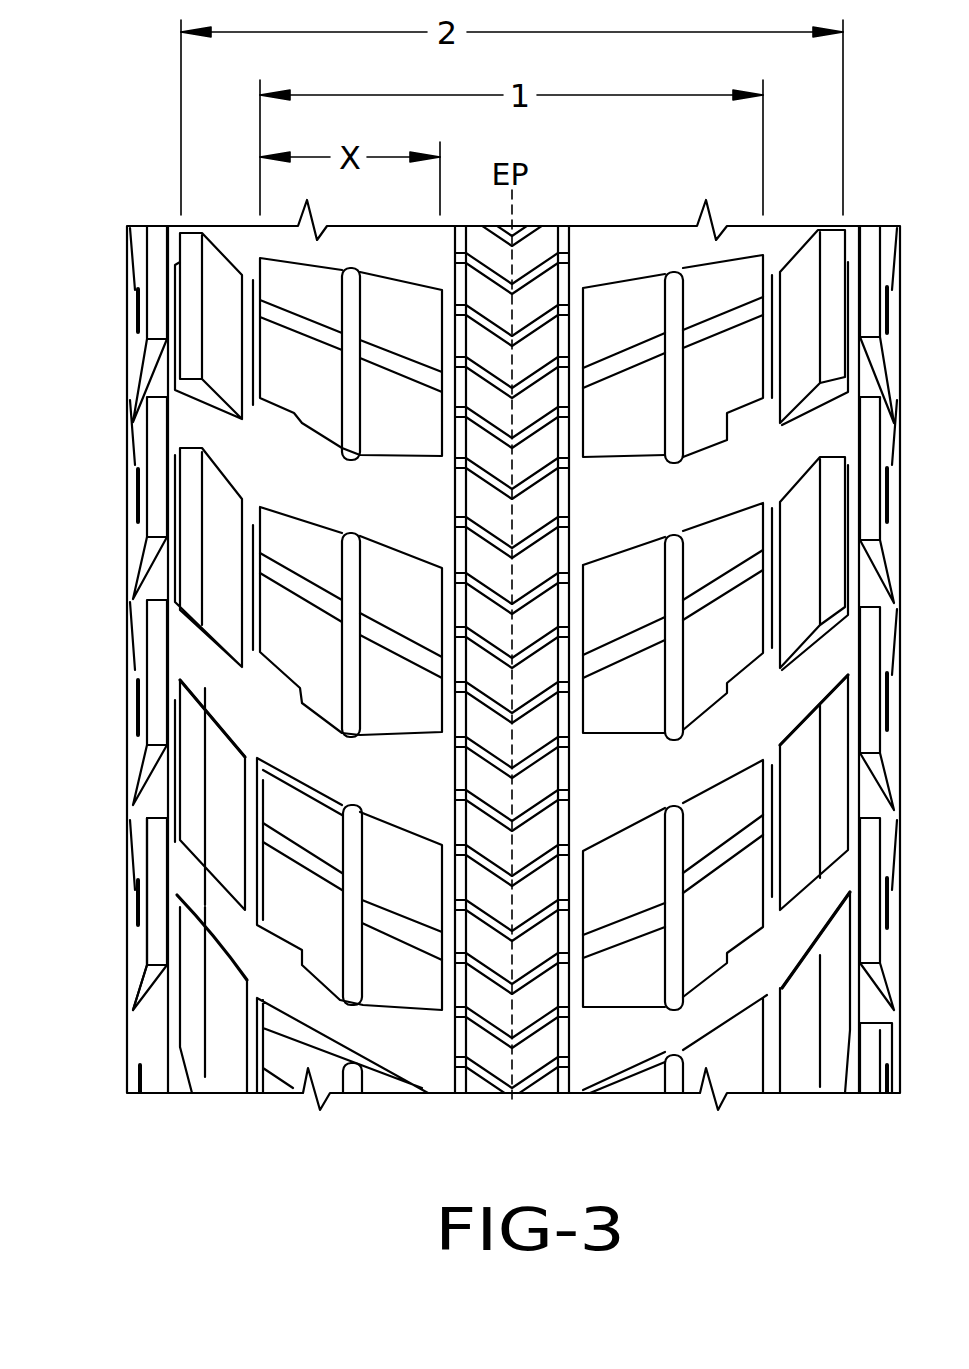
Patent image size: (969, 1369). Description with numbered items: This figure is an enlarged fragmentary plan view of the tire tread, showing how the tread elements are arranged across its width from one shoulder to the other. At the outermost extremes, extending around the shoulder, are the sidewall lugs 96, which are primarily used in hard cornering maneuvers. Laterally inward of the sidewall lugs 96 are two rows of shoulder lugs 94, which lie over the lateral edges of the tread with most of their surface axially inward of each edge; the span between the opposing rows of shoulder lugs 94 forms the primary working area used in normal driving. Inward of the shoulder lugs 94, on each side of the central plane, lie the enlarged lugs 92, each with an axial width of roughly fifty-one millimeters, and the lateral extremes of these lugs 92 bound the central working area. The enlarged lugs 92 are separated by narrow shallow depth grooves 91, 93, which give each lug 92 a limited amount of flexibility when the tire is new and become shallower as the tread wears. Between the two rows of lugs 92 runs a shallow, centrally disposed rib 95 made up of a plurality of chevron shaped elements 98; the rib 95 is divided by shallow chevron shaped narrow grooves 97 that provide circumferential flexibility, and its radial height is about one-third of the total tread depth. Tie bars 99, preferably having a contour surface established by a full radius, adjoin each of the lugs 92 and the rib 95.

The narrow shallow depth groove 91 is at (408, 932).
The enlarged lug 92 is at (283, 903).
The narrow shallow depth groove 93 is at (353, 843).
The shoulder lug 94 is at (195, 787).
The central rib 95 is at (527, 681).
The sidewall lug 96 is at (140, 945).
The chevron shaped narrow groove 97 is at (525, 1038).
The chevron shaped element 98 is at (507, 1060).
The tie bar 99 is at (577, 978).